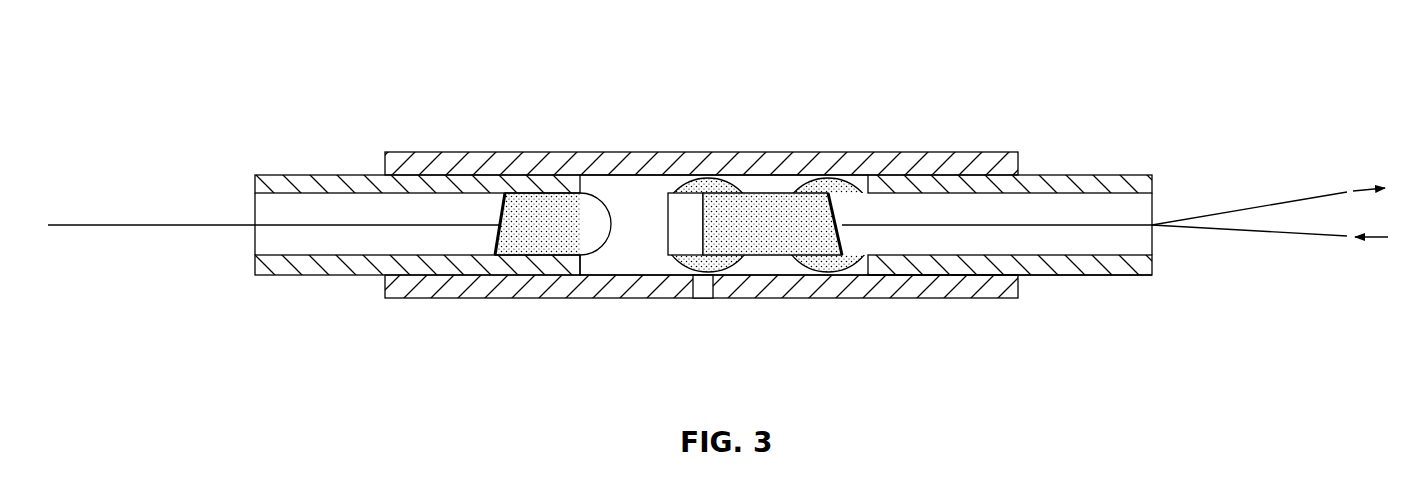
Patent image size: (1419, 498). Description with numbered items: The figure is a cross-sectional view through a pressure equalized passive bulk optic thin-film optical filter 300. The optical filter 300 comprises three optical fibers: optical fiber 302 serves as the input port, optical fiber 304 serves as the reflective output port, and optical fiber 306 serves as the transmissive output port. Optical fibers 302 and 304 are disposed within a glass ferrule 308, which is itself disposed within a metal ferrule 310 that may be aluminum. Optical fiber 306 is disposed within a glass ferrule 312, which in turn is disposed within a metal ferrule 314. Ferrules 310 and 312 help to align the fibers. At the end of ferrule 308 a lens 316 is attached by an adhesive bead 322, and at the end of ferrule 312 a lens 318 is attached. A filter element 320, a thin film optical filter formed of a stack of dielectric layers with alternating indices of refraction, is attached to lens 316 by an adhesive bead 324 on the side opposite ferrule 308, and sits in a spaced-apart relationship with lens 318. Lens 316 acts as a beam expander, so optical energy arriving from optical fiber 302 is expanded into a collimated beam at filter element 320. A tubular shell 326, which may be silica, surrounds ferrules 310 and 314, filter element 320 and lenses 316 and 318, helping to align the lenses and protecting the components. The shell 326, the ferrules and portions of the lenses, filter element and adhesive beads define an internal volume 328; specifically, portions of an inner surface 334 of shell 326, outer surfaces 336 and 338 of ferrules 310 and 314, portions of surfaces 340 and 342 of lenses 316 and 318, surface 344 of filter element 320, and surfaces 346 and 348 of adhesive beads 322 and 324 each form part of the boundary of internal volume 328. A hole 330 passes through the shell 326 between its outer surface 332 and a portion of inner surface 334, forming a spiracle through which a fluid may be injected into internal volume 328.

The optical filter 300 is at (256, 44).
The optical fiber 302 is at (1233, 228).
The optical fiber 304 is at (1248, 208).
The optical fiber 306 is at (93, 225).
The ferrule 308 is at (1052, 213).
The ferrule 310 is at (1107, 275).
The ferrule 312 is at (270, 243).
The ferrule 314 is at (270, 190).
The lens 316 is at (772, 228).
The lens 318 is at (540, 210).
The filter element 320 is at (695, 237).
The adhesive bead 322 is at (828, 178).
The adhesive bead 324 is at (720, 172).
The shell 326 is at (472, 298).
The internal volume 328 is at (606, 268).
The hole 330 is at (703, 288).
The outer surface 332 is at (652, 302).
The inner surface 334 is at (773, 263).
The outer surface 336 is at (575, 172).
The outer surface 338 is at (915, 277).
The surface 340 is at (763, 186).
The surface 342 is at (598, 186).
The surface 344 is at (654, 213).
The surface 346 is at (721, 172).
The surface 348 is at (838, 277).